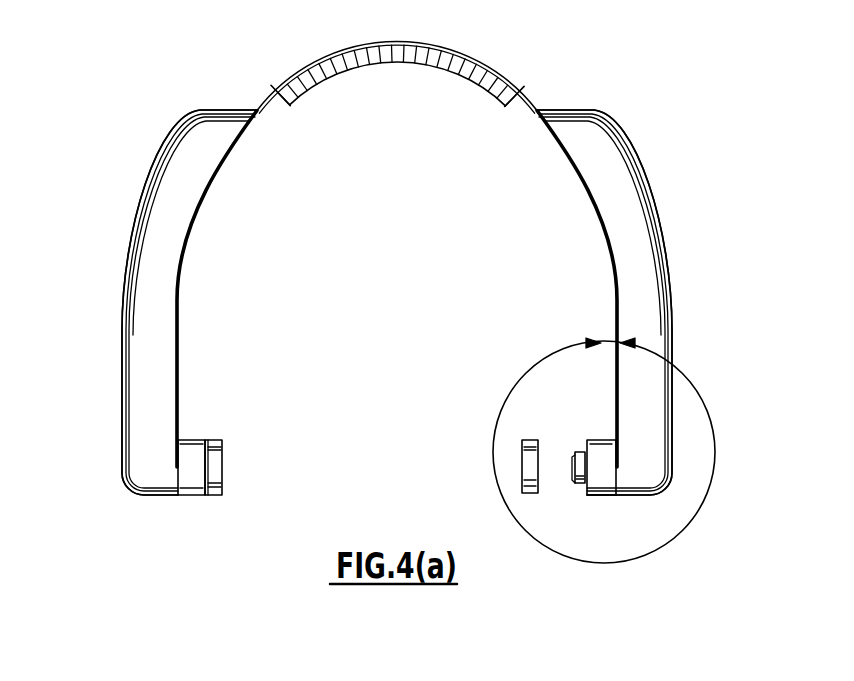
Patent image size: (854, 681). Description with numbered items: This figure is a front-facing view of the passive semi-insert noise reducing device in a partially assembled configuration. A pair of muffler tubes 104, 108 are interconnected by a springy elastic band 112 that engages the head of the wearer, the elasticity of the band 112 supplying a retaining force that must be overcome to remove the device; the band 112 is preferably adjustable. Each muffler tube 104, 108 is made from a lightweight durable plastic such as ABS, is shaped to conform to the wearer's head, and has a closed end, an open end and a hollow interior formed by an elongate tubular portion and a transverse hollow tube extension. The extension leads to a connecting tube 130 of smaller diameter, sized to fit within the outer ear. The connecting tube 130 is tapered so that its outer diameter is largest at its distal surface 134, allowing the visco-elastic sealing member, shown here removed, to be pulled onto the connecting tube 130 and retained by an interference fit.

The muffler tube 104 is at (164, 310).
The muffler tube 108 is at (604, 312).
The elastic band 112 is at (297, 72).
The connecting tube 130 is at (579, 483).
The distal surface of connecting tube 134 is at (556, 456).